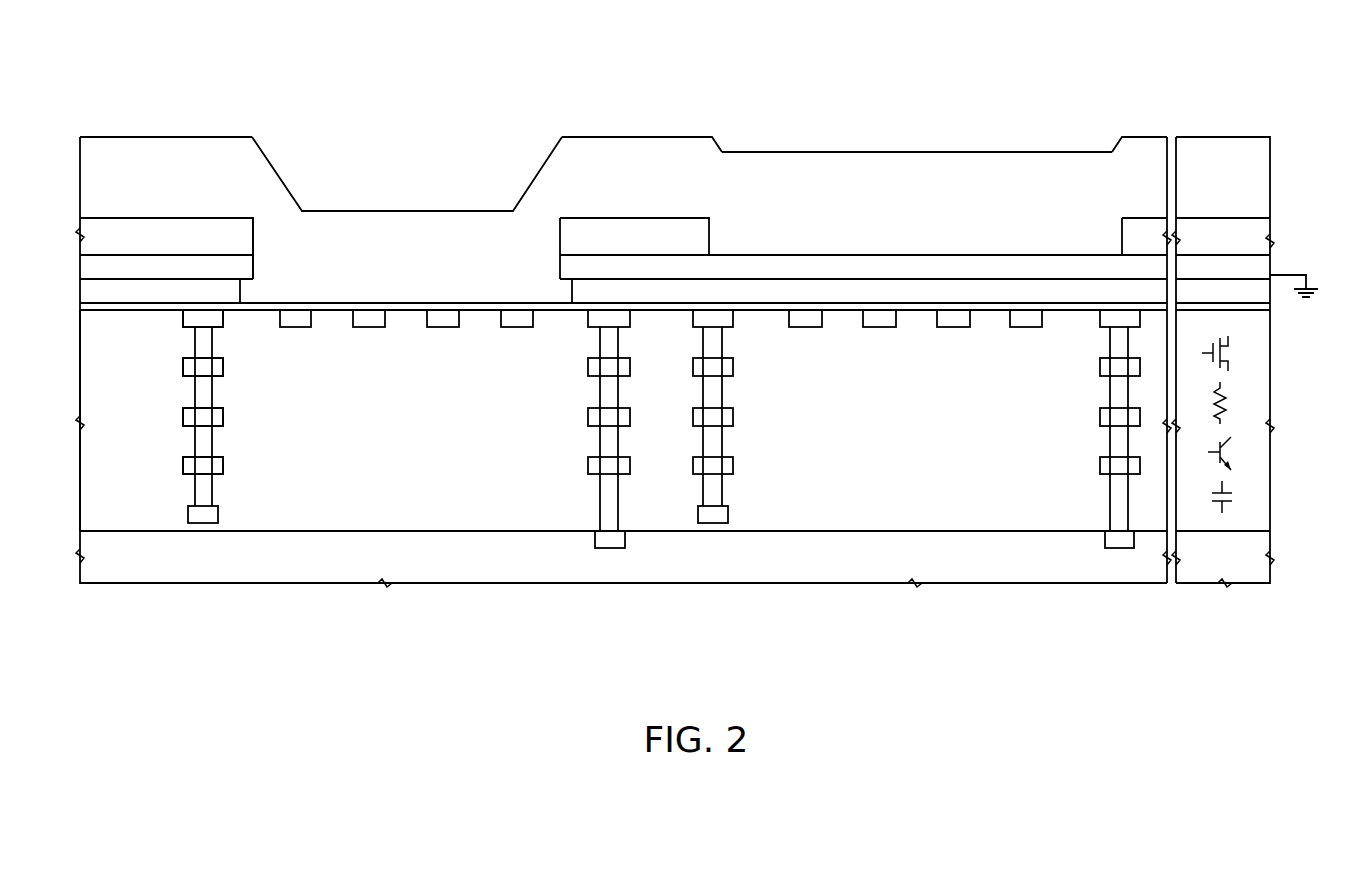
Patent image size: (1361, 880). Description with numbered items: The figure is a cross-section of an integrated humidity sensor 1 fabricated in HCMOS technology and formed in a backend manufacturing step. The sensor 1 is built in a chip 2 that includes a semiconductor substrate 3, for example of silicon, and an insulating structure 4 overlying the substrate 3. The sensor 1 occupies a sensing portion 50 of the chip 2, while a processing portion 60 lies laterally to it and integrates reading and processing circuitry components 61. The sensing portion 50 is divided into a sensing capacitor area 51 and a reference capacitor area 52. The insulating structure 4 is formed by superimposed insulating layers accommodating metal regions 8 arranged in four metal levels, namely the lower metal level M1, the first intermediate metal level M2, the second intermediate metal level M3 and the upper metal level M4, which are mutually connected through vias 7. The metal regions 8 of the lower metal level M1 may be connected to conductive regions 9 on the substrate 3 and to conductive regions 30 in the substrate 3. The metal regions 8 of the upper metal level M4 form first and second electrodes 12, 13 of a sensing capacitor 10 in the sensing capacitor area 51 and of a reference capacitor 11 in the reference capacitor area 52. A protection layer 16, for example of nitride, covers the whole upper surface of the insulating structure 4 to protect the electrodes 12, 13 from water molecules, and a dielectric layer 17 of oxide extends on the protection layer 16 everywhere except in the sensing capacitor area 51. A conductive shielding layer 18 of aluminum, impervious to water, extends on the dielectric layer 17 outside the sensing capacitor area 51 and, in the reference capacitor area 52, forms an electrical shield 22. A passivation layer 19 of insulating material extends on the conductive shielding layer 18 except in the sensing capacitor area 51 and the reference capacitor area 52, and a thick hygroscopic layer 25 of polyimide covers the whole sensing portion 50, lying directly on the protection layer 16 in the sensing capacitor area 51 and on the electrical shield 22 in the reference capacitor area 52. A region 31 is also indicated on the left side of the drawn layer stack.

The integrated humidity sensor 1 is at (86, 76).
The chip 2 is at (70, 402).
The semiconductor substrate 3 is at (118, 567).
The insulating structure 4 is at (118, 511).
The vias 7 is at (208, 388).
The metal regions 8 is at (218, 320).
The conductive regions 9 is at (222, 516).
The sensing capacitor 10 is at (420, 382).
The reference capacitor 11 is at (930, 386).
The first electrodes 12 is at (300, 323).
The second electrodes 13 is at (374, 322).
The protection layer 16 is at (1268, 308).
The dielectric layer 17 is at (78, 292).
The conductive shielding layer 18 is at (76, 270).
The passivation layer 19 is at (76, 226).
The electrical shield 22 is at (1013, 250).
The hygroscopic layer 25 is at (632, 181).
The conductive regions 30 is at (600, 540).
The electrode 31 is at (268, 245).
The sensing portion 50 is at (340, 94).
The sensing capacitor area 51 is at (422, 256).
The reference capacitor area 52 is at (903, 216).
The processing portion 60 is at (1244, 124).
The reading and processing circuitry components 61 is at (1256, 450).
The lower metal level M1 is at (170, 465).
The first intermediate metal level M2 is at (170, 418).
The second intermediate metal level M3 is at (170, 368).
The upper metal level M4 is at (170, 322).